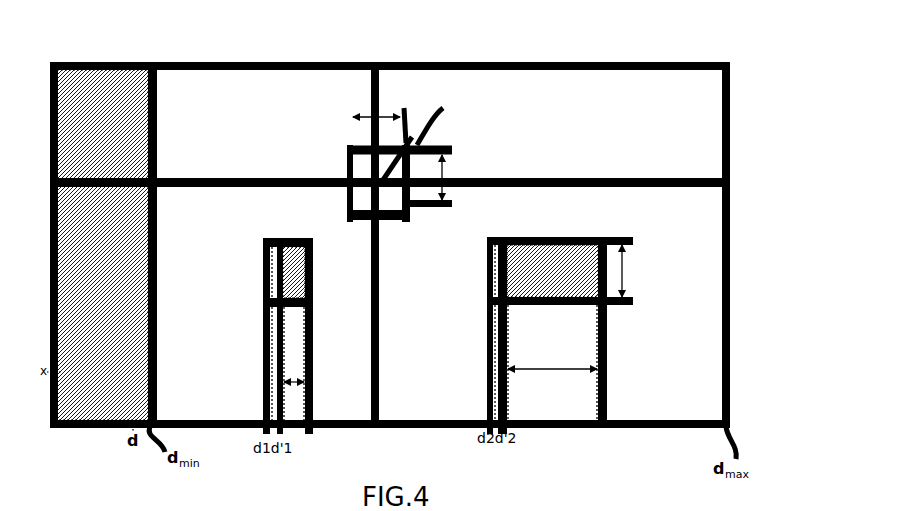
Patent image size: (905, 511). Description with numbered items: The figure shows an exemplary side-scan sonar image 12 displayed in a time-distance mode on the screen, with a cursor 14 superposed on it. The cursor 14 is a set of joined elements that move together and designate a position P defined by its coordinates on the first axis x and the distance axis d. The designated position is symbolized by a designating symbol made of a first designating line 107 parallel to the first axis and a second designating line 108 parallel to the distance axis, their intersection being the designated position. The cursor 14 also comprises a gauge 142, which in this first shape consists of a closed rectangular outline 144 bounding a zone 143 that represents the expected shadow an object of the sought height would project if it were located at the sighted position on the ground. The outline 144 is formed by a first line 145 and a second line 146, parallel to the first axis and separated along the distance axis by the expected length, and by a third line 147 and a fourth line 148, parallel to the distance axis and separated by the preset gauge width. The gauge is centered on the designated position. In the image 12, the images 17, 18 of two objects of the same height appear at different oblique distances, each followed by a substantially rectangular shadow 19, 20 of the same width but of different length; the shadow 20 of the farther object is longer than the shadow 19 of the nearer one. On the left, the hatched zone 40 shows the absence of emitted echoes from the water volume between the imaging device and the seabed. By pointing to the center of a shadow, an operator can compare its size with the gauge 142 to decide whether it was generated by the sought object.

The image 12 is at (242, 58).
The cursor 14 is at (375, 158).
The image of first object 17 is at (263, 318).
The image of second object 18 is at (551, 314).
The shadow of first object 19 is at (294, 237).
The shadow of second object 20 is at (554, 237).
The hatched zone 40 is at (90, 400).
The first designating line 107 is at (380, 322).
The second designating line 108 is at (182, 178).
The gauge 142 is at (387, 228).
The zone 143 is at (412, 137).
The outline 144 is at (346, 195).
The first line 145 is at (347, 180).
The second line 146 is at (413, 194).
The third line 147 is at (354, 222).
The fourth line 148 is at (348, 137).